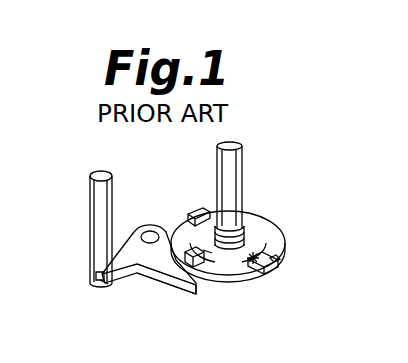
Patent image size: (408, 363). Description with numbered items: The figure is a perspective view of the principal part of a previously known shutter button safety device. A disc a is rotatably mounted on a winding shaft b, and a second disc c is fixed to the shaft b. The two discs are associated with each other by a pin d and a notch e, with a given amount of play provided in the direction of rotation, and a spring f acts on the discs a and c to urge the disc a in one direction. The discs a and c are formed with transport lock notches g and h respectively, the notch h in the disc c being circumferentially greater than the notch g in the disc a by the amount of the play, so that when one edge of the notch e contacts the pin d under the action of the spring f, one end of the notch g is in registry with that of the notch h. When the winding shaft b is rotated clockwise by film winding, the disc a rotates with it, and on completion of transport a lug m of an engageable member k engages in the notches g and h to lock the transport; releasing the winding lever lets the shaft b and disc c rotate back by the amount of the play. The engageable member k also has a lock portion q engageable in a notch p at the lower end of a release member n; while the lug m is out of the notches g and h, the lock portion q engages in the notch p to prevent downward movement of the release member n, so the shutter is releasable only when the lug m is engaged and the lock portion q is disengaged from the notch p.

The disc a is at (290, 223).
The winding shaft b is at (242, 166).
The disc c is at (229, 284).
The pin d is at (251, 279).
The notch e is at (275, 265).
The spring f is at (245, 252).
The transport lock notch g is at (176, 284).
The transport lock notch h is at (201, 281).
The engageable member k is at (146, 228).
The lug m is at (208, 256).
The release member n is at (90, 198).
The notch p is at (96, 275).
The lock portion q is at (106, 283).